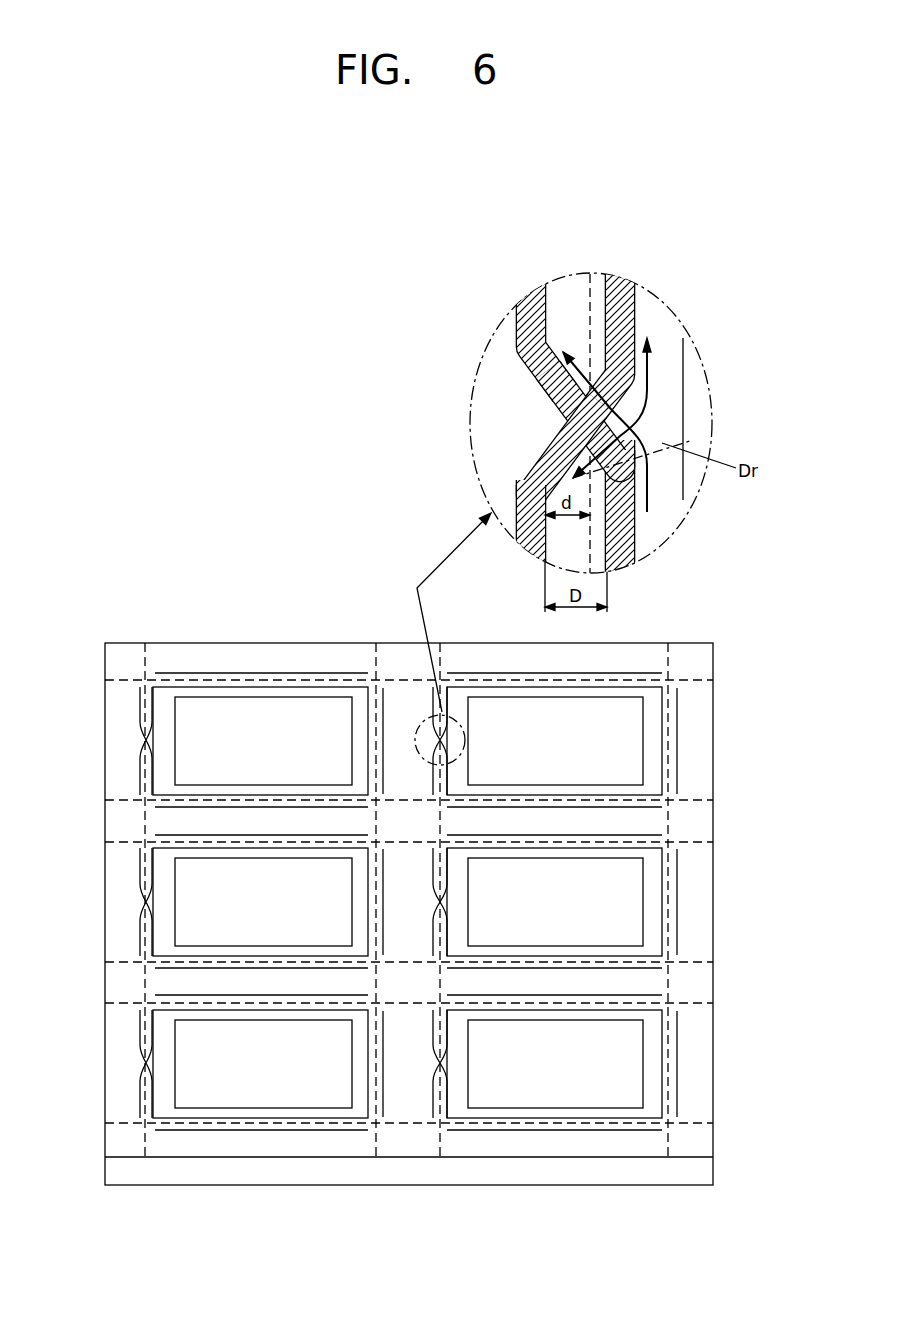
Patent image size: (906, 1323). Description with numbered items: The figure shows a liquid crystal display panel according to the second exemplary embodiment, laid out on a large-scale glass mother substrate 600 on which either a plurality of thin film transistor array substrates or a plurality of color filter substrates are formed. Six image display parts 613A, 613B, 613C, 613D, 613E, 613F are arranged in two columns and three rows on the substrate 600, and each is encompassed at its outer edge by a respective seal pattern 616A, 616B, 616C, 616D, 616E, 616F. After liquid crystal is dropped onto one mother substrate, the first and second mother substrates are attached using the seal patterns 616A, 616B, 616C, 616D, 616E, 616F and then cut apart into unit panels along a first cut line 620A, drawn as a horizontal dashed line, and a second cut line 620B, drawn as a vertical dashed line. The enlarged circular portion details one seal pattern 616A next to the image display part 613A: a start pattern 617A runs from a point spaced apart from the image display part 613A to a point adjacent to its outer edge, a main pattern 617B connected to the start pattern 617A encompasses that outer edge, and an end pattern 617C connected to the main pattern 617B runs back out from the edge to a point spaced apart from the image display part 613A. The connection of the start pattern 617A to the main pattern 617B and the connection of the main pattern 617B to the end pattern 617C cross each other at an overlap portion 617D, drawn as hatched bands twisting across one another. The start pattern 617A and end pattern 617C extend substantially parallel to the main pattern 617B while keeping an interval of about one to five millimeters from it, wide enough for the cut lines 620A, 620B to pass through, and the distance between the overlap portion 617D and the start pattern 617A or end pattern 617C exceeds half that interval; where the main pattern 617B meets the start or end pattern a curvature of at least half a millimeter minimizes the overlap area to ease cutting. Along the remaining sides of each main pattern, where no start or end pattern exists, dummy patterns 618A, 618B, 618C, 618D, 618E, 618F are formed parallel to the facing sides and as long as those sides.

The substrate 600 is at (697, 1172).
The image display part 613A is at (571, 753).
The image display part 613B is at (571, 913).
The image display part 613C is at (571, 1074).
The image display part 613D is at (281, 753).
The image display part 613E is at (281, 913).
The image display part 613F is at (281, 1074).
The seal pattern 616A is at (662, 765).
The seal pattern 616B is at (662, 928).
The seal pattern 616C is at (662, 1092).
The seal pattern 616D is at (152, 717).
The seal pattern 616E is at (152, 880).
The seal pattern 616F is at (152, 1040).
The start pattern 617A is at (522, 500).
The main pattern 617B is at (618, 285).
The end pattern 617C is at (522, 328).
The overlap portion 617D is at (585, 420).
The dummy pattern 618A is at (677, 725).
The dummy pattern 618B is at (677, 888).
The dummy pattern 618C is at (677, 1050).
The dummy pattern 618D is at (178, 673).
The dummy pattern 618E is at (180, 835).
The dummy pattern 618F is at (180, 995).
The first cut line 620A is at (683, 680).
The second cut line 620B is at (670, 656).